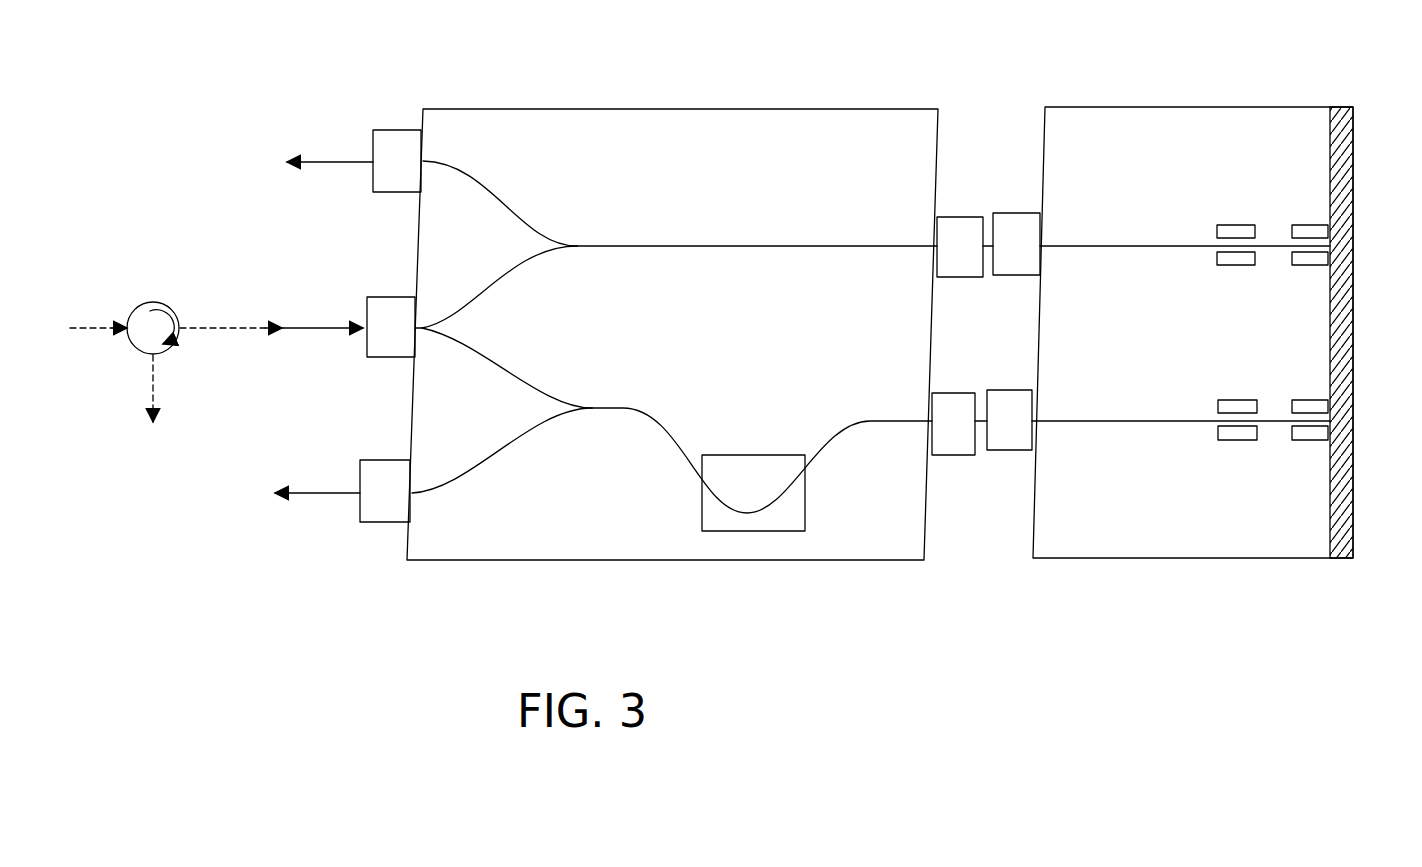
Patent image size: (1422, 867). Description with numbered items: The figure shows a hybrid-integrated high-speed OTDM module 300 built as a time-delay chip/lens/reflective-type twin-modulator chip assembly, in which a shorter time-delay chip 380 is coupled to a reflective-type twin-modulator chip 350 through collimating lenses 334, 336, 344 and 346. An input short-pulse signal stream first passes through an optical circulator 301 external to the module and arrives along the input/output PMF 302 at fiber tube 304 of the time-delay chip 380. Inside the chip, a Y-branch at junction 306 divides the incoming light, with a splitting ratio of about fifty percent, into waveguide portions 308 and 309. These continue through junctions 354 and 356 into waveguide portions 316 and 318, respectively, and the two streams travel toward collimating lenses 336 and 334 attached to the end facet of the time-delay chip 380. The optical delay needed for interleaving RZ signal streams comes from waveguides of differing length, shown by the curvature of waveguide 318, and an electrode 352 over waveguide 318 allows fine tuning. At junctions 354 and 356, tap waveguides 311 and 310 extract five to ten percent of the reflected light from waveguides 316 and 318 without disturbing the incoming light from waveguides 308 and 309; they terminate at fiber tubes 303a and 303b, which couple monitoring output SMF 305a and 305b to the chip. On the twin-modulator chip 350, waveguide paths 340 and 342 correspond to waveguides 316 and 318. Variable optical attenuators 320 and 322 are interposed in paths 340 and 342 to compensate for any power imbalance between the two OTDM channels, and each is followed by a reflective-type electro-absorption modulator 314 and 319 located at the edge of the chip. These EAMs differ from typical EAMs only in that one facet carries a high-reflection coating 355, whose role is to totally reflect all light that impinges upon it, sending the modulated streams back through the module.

The hybrid-integrated high-speed OTDM module 300 is at (773, 607).
The optical circulator 301 is at (145, 302).
The input/output PMF 302 is at (303, 327).
The fiber tube 303a is at (377, 193).
The fiber tube 303b is at (362, 525).
The fiber tube 304 is at (368, 360).
The monitoring output SMF 305a is at (313, 162).
The monitoring output SMF 305b is at (300, 492).
The junction 306 is at (422, 330).
The waveguide portion 308 is at (488, 292).
The waveguide portion 309 is at (515, 372).
The waveguide 310 is at (470, 470).
The waveguide 311 is at (495, 190).
The reflective-type electro-absorption modulator 314 is at (1293, 265).
The waveguide portion 316 is at (710, 245).
The waveguide portion 318 is at (660, 443).
The reflective-type electro-absorption modulator 319 is at (1293, 442).
The variable optical attenuator 320 is at (1223, 223).
The variable optical attenuator 322 is at (1225, 398).
The collimating lens 334 is at (945, 457).
The collimating lens 336 is at (943, 280).
The waveguide path 340 is at (1113, 243).
The waveguide path 342 is at (1112, 418).
The collimating lens 344 is at (998, 388).
The collimating lens 346 is at (1000, 212).
The reflective-type twin-modulator chip 350 is at (1207, 105).
The electrode 352 is at (712, 455).
The junction 354 is at (572, 242).
The high-reflection coating 355 is at (1345, 217).
The junction 356 is at (587, 400).
The time-delay chip 380 is at (552, 108).